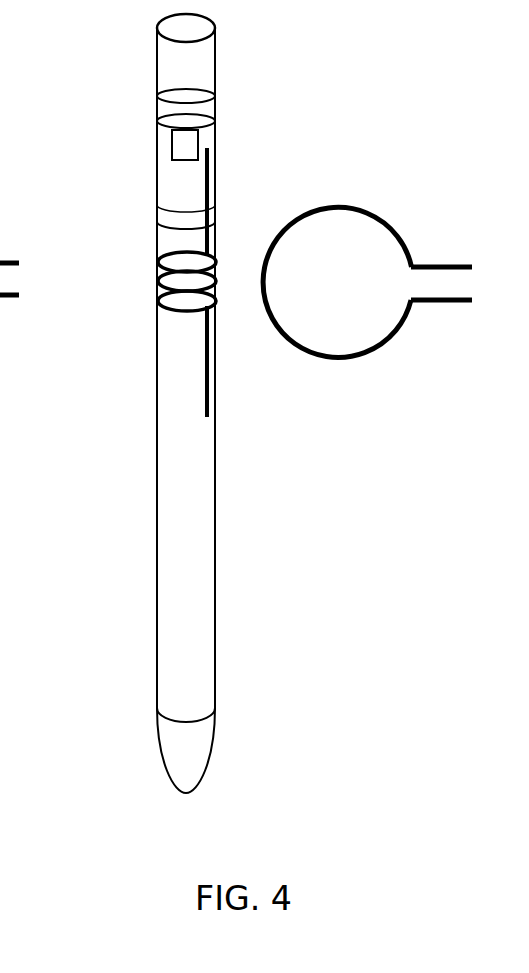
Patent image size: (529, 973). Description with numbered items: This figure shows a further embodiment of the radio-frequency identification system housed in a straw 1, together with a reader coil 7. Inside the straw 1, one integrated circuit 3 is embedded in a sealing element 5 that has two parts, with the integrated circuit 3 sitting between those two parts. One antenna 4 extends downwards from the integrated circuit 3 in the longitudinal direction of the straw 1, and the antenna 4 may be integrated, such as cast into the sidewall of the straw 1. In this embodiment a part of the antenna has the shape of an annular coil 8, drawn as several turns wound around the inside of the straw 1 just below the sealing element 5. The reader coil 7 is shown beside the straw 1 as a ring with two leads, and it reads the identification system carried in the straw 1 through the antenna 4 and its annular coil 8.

The straw 1 is at (117, 458).
The integrated circuit 3 is at (185, 160).
The antenna 4 is at (209, 181).
The sealing element 5 is at (163, 203).
The reader coil 7 is at (325, 370).
The coil 8 is at (150, 300).